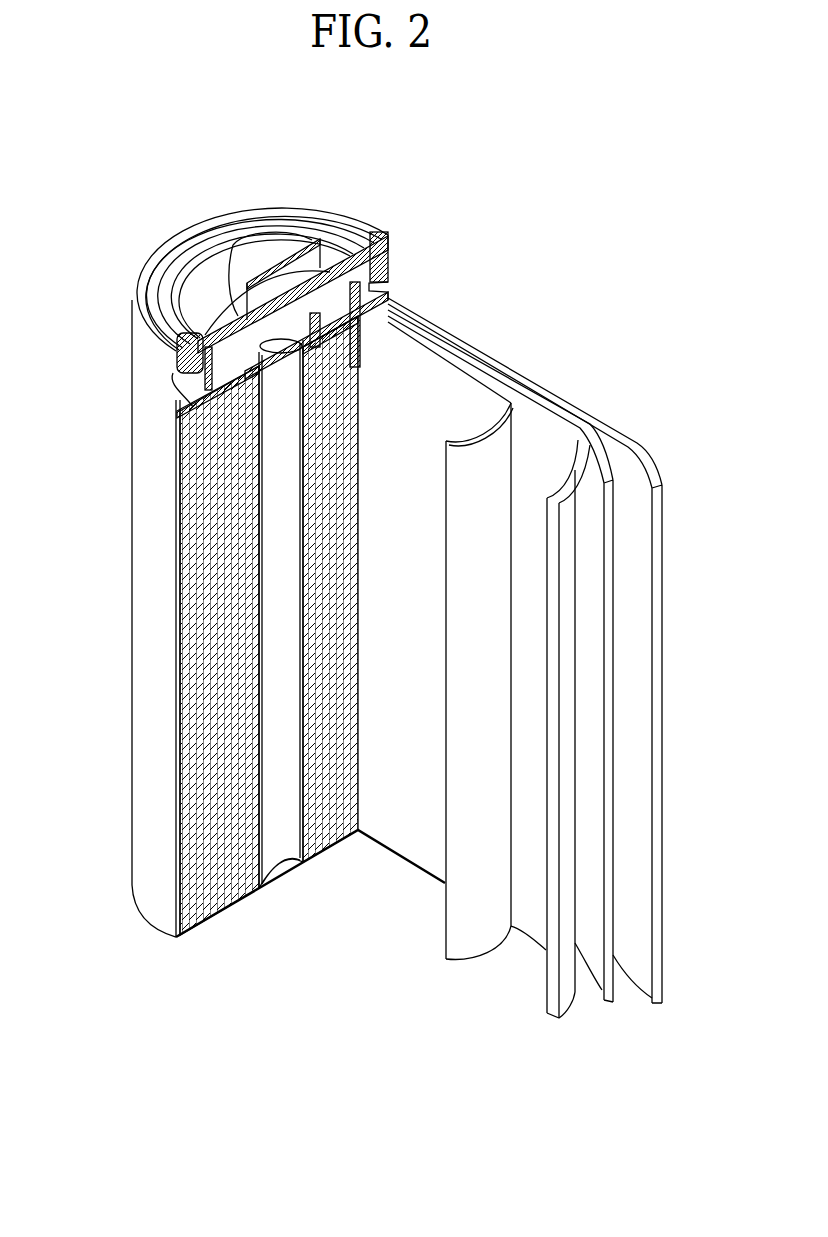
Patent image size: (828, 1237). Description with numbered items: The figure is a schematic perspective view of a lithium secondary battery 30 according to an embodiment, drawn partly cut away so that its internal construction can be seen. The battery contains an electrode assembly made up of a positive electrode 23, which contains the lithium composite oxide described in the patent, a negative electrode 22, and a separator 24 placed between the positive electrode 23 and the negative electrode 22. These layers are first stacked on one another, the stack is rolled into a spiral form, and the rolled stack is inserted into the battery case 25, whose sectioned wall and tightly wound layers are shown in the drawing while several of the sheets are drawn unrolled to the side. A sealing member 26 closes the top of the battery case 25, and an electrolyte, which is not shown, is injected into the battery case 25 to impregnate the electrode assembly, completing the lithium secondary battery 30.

The lithium secondary battery 30 is at (342, 148).
The negative electrode 22 is at (641, 446).
The positive electrode 23 is at (563, 450).
The separator 24 is at (483, 440).
The battery case 25 is at (138, 616).
The sealing member 26 is at (253, 247).